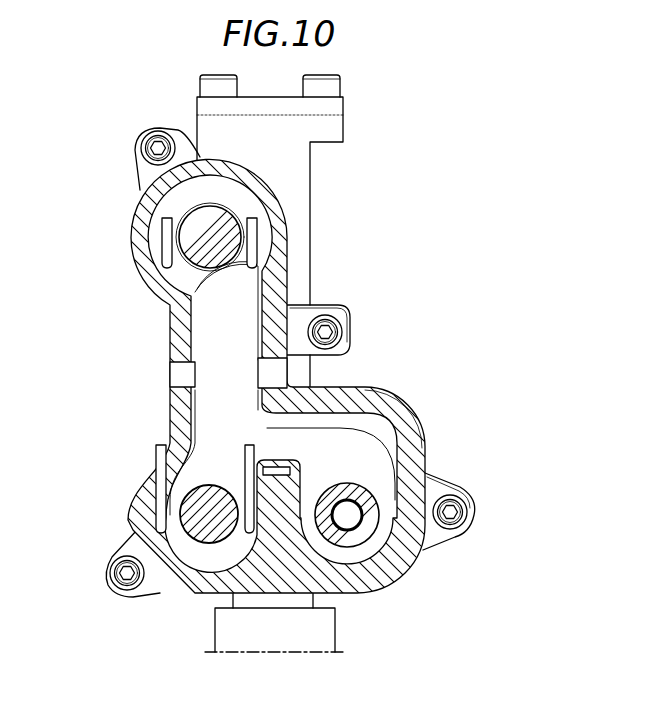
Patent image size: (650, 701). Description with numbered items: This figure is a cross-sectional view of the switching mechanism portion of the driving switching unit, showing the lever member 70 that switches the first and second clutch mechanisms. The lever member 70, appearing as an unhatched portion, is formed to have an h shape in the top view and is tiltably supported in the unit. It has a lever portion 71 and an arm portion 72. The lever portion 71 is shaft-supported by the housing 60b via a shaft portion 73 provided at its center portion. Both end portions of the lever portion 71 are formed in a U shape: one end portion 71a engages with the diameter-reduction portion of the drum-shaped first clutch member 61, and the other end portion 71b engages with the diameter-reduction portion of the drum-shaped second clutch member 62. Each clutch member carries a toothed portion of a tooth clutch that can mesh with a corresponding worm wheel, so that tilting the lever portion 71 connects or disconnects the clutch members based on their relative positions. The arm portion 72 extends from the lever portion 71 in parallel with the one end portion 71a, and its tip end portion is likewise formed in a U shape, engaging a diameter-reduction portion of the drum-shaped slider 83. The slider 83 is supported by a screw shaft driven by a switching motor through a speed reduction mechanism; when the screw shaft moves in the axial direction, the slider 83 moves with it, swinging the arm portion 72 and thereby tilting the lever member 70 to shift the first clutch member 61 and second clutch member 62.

The housing 60b is at (137, 235).
The second clutch member 62 is at (183, 202).
The lever member 70 is at (243, 303).
The lever portion 71 is at (207, 413).
The one end portion 71a is at (168, 462).
The other end portion 71b is at (160, 298).
The arm portion 72 is at (367, 468).
The shaft portion 73 is at (175, 377).
The first clutch member 61 is at (200, 557).
The slider 83 is at (372, 547).